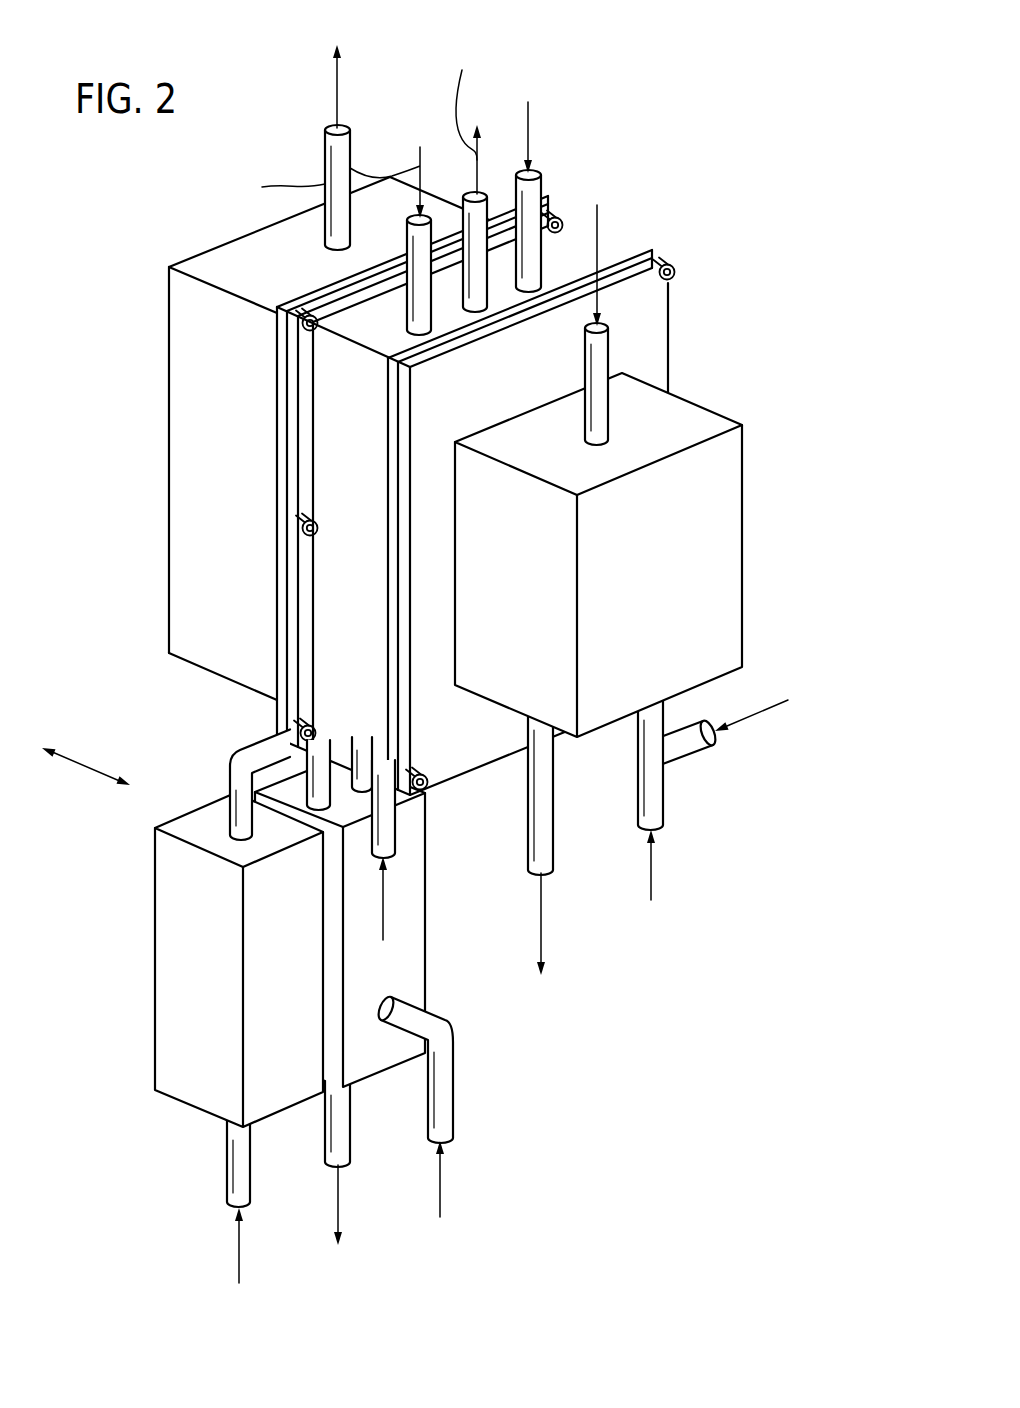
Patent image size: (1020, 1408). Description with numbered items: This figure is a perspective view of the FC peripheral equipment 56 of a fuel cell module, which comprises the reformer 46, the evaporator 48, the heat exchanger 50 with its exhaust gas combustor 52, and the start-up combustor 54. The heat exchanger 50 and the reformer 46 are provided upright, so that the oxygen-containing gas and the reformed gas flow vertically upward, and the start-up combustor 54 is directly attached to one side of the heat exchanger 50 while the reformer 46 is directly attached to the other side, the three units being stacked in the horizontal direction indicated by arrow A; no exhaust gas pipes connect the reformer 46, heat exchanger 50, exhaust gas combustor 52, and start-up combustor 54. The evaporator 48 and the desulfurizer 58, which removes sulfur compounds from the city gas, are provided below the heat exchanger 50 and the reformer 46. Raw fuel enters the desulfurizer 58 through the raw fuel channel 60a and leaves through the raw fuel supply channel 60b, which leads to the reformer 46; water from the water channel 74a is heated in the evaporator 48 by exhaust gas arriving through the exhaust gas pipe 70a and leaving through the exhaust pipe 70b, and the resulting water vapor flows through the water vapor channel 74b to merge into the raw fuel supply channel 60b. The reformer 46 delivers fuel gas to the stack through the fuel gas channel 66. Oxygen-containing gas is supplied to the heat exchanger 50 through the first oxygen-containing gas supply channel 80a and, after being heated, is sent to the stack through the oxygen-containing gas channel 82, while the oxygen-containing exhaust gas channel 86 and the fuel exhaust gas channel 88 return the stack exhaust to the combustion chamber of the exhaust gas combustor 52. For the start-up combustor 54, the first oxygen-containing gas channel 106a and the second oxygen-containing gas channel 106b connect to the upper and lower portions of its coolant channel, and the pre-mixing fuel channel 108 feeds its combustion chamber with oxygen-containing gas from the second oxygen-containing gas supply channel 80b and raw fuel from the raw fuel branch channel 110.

The reformer 46 is at (190, 368).
The evaporator 48 is at (408, 968).
The heat exchanger 50 is at (375, 495).
The exhaust gas combustor 52 is at (331, 489).
The start-up combustor 54 is at (635, 530).
The FC peripheral equipment 56 is at (804, 180).
The desulfurizer 58 is at (176, 963).
The raw fuel channel 60a is at (242, 1156).
The raw fuel supply channel 60b is at (243, 767).
The fuel gas channel 66 is at (333, 155).
The exhaust gas pipe 70a is at (357, 748).
The exhaust pipe 70b is at (343, 1127).
The water channel 74a is at (453, 1097).
The water vapor channel 74b is at (301, 782).
The first oxygen-containing gas supply channel 80a is at (387, 832).
The second oxygen-containing gas supply channel 80b is at (645, 788).
The oxygen-containing gas channel 82 is at (474, 310).
The oxygen-containing exhaust gas channel 86 is at (407, 311).
The fuel exhaust gas channel 88 is at (528, 290).
The first oxygen-containing gas channel 106a is at (603, 410).
The second oxygen-containing gas channel 106b is at (549, 840).
The pre-mixing fuel channel 108 is at (617, 785).
The raw fuel branch channel 110 is at (688, 741).